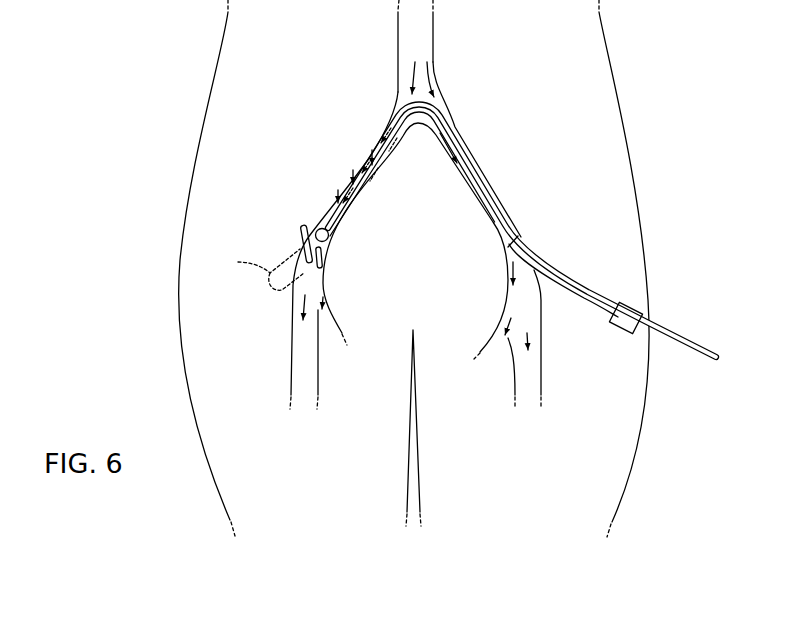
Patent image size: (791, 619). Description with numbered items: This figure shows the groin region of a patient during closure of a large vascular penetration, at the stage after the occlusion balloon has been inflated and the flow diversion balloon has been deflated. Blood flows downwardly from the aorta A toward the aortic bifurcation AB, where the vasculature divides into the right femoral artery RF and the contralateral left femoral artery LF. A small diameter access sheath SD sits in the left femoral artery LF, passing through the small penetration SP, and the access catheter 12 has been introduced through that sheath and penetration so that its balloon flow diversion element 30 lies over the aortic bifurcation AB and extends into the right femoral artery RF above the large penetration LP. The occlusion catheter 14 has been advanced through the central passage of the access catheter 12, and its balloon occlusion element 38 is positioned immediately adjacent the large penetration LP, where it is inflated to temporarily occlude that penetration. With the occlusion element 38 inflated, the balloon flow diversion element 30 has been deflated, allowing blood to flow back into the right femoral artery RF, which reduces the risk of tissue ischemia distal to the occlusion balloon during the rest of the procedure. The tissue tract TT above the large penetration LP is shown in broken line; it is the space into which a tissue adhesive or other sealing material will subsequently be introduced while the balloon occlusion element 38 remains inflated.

The access catheter 12 is at (493, 197).
The occlusion catheter 14 is at (366, 164).
The balloon flow diversion element 30 is at (410, 125).
The balloon occlusion element 38 is at (333, 243).
The aorta A is at (434, 28).
The aortic bifurcation AB is at (443, 101).
The left femoral artery LF is at (473, 152).
The right femoral artery RF is at (338, 198).
The large penetration LP is at (316, 232).
The tissue tract TT is at (252, 269).
The small penetration SP is at (513, 228).
The small diameter access sheath SD is at (547, 263).